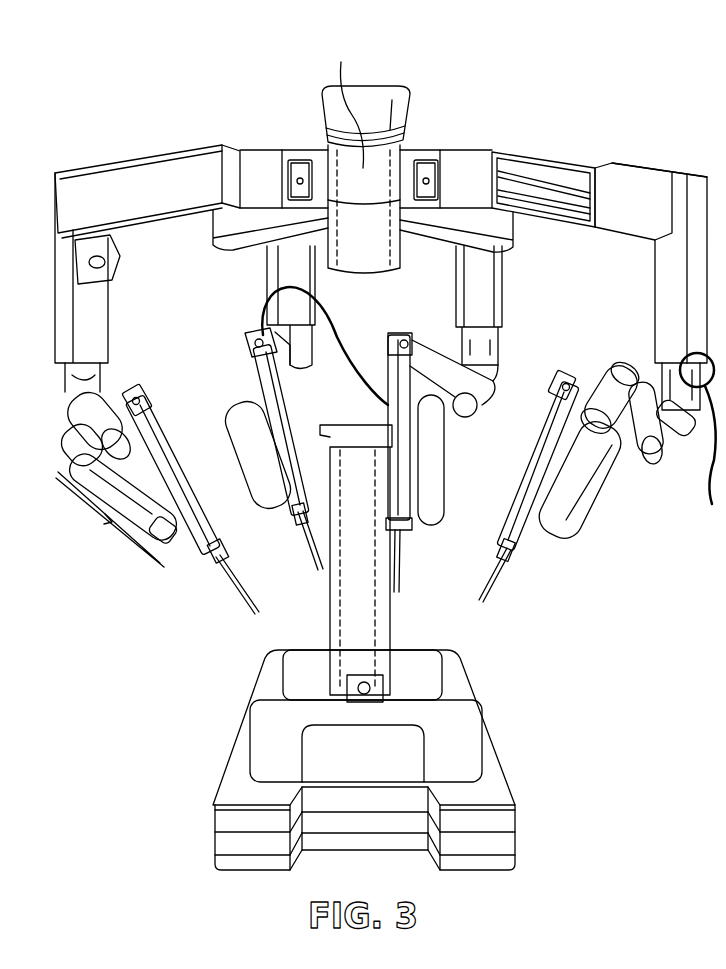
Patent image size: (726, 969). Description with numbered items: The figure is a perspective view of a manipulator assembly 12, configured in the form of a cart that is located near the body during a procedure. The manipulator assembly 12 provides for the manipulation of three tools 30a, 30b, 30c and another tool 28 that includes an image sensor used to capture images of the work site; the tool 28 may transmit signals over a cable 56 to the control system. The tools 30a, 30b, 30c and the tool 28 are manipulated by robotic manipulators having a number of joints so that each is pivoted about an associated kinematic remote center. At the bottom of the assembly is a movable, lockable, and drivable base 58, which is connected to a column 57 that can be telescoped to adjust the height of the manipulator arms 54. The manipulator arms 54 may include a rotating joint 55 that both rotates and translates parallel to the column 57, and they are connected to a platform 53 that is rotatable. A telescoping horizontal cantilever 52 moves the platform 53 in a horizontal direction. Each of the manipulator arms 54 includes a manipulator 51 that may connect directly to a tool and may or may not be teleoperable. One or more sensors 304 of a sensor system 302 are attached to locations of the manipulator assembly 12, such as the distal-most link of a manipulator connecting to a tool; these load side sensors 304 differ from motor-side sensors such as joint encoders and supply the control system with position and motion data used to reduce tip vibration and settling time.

The manipulator assembly 12 is at (526, 72).
The tool 28 is at (256, 338).
The tool 30a is at (190, 476).
The tool 30b is at (401, 553).
The tool 30c is at (520, 497).
The manipulator 51 is at (110, 519).
The telescoping horizontal cantilever 52 is at (377, 86).
The platform 53 is at (346, 101).
The manipulator arms 54 is at (673, 157).
The rotating joint 55 is at (660, 378).
The cable 56 is at (708, 470).
The column 57 is at (336, 608).
The base 58 is at (500, 793).
The sensor system 302 is at (226, 693).
The sensors 304 is at (122, 400).